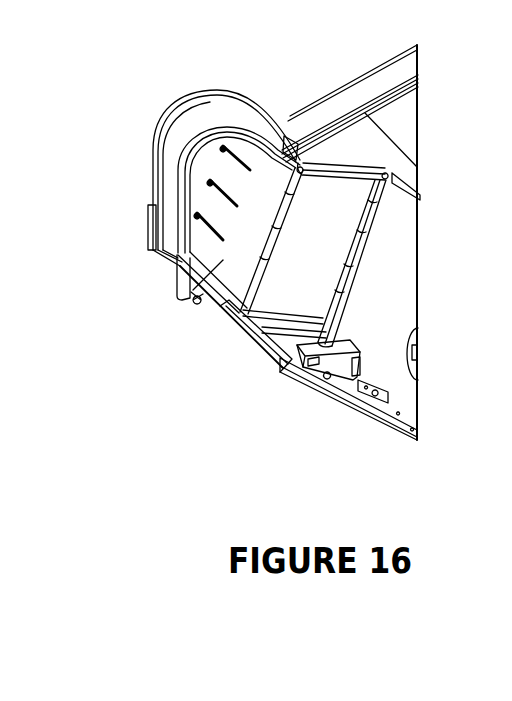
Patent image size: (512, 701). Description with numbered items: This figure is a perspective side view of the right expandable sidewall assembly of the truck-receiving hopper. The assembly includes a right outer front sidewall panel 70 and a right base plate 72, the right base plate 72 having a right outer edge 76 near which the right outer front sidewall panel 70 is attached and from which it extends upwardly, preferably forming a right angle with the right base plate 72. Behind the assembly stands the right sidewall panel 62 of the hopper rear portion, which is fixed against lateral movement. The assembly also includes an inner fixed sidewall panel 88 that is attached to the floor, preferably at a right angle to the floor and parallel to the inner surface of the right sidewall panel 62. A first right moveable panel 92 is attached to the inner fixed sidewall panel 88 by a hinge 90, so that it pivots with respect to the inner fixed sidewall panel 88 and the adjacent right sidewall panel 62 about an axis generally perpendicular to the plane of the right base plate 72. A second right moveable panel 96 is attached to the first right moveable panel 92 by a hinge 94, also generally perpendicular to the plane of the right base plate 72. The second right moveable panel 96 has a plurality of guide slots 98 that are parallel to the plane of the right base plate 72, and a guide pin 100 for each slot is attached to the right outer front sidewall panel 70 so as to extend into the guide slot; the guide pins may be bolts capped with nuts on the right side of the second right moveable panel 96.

The right sidewall panel 62 is at (397, 287).
The right outer front sidewall panel 70 is at (185, 130).
The right base plate 72 is at (257, 339).
The right outer edge 76 is at (168, 258).
The inner fixed sidewall panel 88 is at (398, 175).
The hinge 90 is at (376, 217).
The first right moveable panel 92 is at (328, 213).
The hinge 94 is at (281, 243).
The second right moveable panel 96 is at (182, 298).
The guide slots 98 is at (243, 156).
The guide pin 100 is at (206, 185).